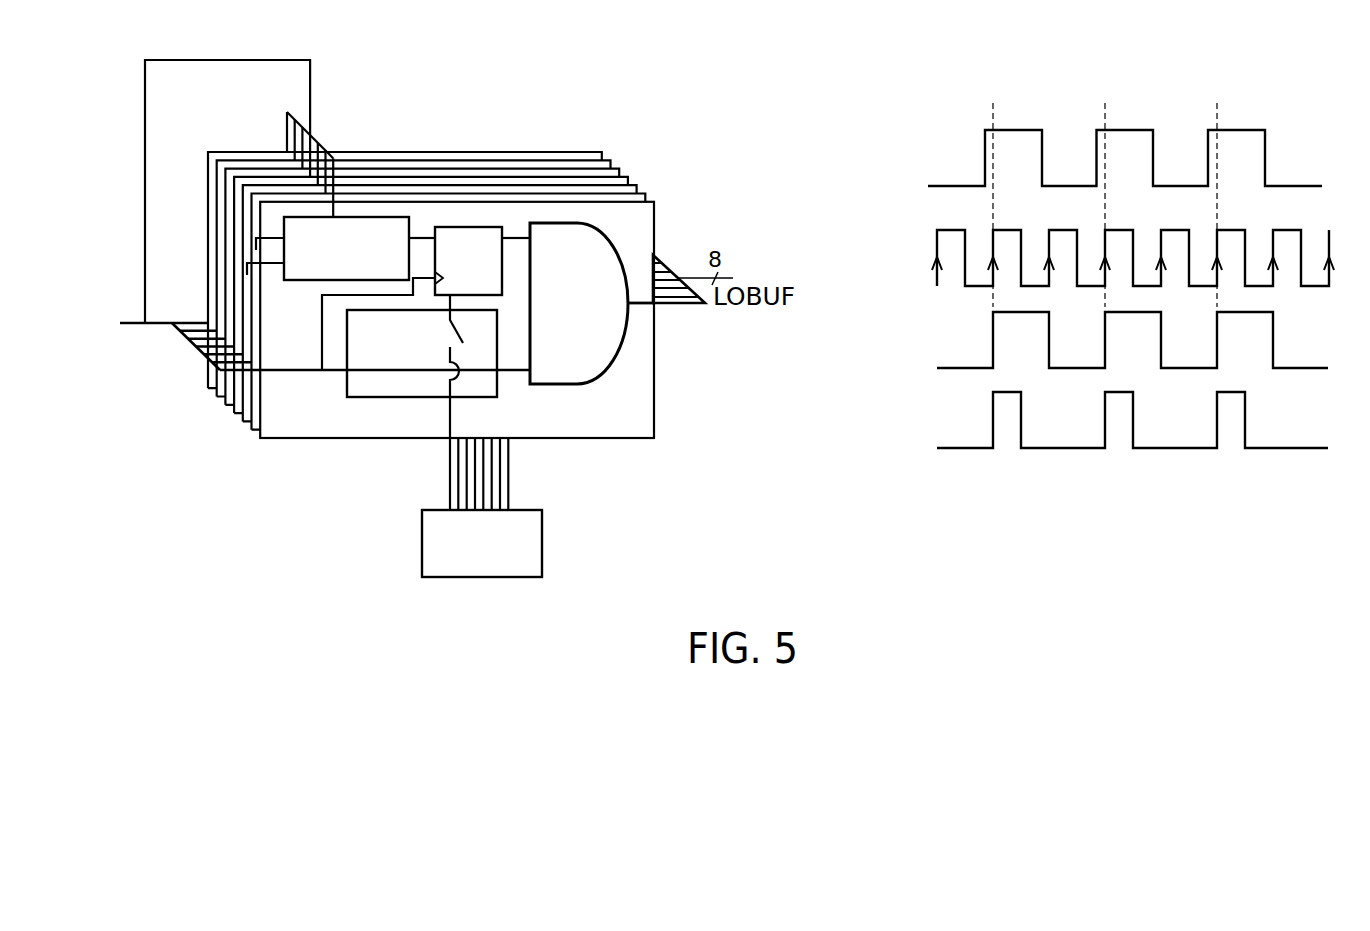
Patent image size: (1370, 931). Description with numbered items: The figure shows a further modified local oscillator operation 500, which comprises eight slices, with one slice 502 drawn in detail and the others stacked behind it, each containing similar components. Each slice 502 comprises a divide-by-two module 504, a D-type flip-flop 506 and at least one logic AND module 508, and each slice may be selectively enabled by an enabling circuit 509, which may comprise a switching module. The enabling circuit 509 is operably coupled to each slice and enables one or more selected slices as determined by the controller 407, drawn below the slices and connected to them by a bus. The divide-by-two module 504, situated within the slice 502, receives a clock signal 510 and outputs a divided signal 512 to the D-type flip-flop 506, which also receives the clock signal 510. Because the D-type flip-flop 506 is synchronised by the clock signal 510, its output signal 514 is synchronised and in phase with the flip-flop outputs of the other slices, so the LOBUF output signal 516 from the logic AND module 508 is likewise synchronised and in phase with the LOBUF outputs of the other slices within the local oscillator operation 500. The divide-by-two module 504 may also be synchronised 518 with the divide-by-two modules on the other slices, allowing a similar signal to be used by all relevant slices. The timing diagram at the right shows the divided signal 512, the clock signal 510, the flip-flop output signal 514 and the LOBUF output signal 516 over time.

The further modified local oscillator operation 500 is at (606, 84).
The slice 502 is at (655, 380).
The divide-by-2 module 504 is at (372, 215).
The D-type flip-flop 506 is at (468, 225).
The logic AND module 508 is at (603, 373).
The enabling circuit 509 is at (498, 382).
The synchronisation of divide-by-2 module 518 is at (273, 244).
The controller 407 is at (422, 540).
The clock signal 510 is at (841, 234).
The DIV2 signal 512 is at (841, 144).
The output signal of the D-type flip-flop 514 is at (841, 320).
The LOBUF output signal 516 is at (841, 399).